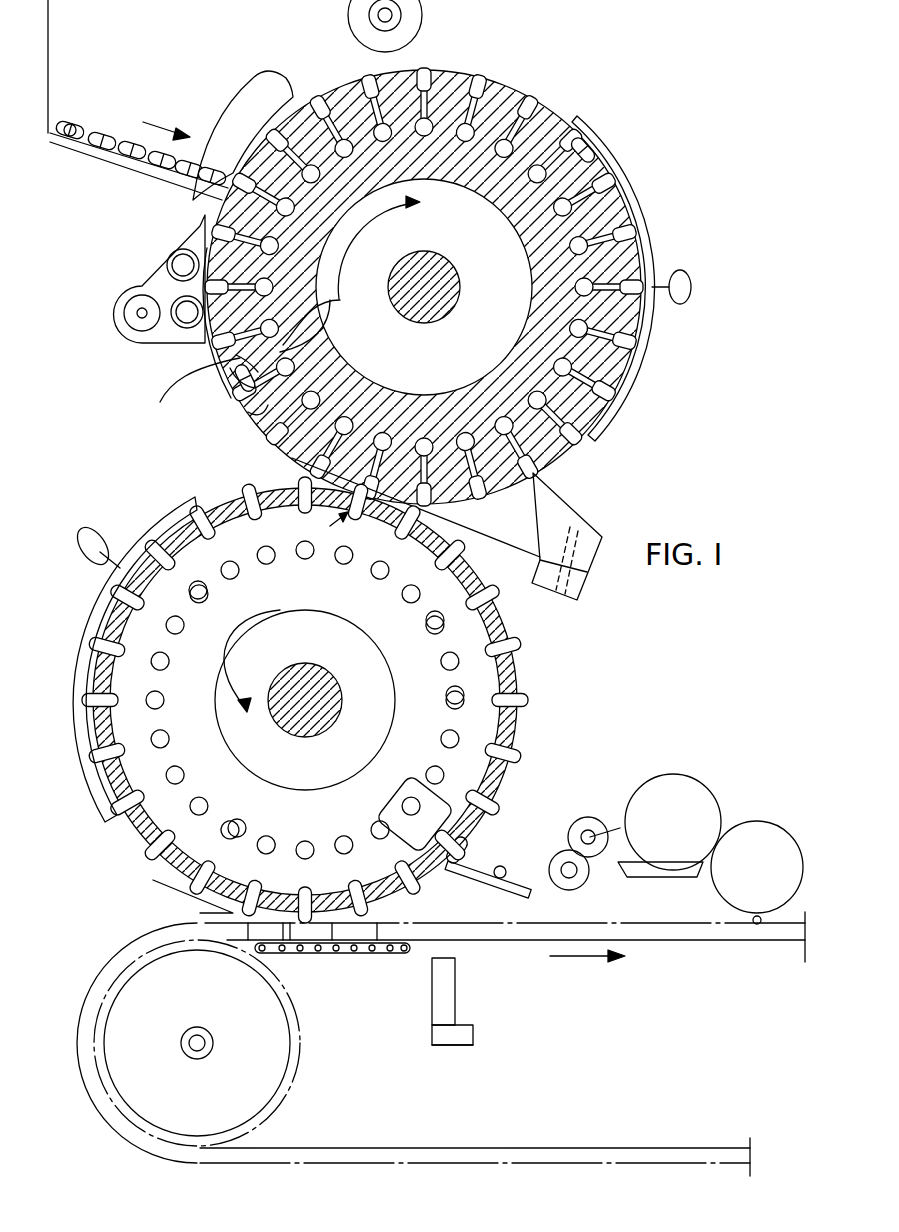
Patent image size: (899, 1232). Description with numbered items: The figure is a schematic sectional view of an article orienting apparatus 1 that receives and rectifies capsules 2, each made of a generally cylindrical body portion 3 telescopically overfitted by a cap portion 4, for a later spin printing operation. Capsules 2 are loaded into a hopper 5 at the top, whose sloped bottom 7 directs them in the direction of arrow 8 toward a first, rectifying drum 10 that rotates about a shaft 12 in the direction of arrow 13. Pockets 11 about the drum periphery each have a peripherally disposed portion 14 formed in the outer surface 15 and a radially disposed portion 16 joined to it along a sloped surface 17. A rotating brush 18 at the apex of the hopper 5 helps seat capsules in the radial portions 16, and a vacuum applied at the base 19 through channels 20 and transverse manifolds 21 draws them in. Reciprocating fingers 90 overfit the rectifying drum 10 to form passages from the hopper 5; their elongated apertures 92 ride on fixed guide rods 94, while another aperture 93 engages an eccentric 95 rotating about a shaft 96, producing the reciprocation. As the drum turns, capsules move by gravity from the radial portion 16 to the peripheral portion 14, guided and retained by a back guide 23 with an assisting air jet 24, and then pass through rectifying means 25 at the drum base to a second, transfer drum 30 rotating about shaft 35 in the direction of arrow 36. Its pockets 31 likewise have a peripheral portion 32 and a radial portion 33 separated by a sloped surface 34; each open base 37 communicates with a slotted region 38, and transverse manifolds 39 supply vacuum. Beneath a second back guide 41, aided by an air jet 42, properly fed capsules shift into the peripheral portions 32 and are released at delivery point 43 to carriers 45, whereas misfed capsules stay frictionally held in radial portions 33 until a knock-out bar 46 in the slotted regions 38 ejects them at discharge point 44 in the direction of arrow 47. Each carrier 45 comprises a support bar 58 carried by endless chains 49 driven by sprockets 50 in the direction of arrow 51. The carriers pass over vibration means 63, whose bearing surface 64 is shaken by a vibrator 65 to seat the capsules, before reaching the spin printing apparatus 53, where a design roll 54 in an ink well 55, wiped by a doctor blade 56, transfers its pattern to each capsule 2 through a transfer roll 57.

The article orienting apparatus 1 is at (638, 663).
The capsules 2 is at (150, 178).
The body portion 3 is at (92, 136).
The cap portion 4 is at (72, 125).
The hopper 5 is at (161, 62).
The sloped bottom 7 is at (70, 150).
The arrow 8 is at (172, 126).
The rectifying drum 10 is at (410, 361).
The pockets 11 is at (225, 386).
The shaft 12 is at (462, 280).
The arrow 13 is at (358, 290).
The peripherally disposed portion 14 is at (258, 420).
The outer surface 15 is at (236, 358).
The radially disposed portion 16 is at (268, 410).
The sloped surface 17 is at (252, 372).
The rotating brush 18 is at (423, 13).
The base 19 is at (186, 387).
The channels 20 is at (332, 298).
The manifolds 21 is at (336, 345).
The back guide 23 is at (642, 228).
The air jet 24 is at (690, 295).
The rectifying means 25 is at (545, 518).
The transfer drum 30 is at (320, 648).
The pockets 31 is at (528, 677).
The peripherally disposed portion 32 is at (243, 498).
The radially disposed portion 33 is at (262, 508).
The sloped surface 34 is at (255, 520).
The shaft 35 is at (330, 718).
The arrow 36 is at (245, 660).
The base 37 is at (190, 555).
The slotted region 38 is at (324, 591).
The manifolds 39 is at (447, 702).
The back guide 41 is at (164, 522).
The air jet 42 is at (85, 540).
The delivery point 43 is at (328, 525).
The discharge point 44 is at (272, 886).
The carriers 45 is at (315, 938).
The knock-out bar 46 is at (404, 826).
The arrow 47 is at (462, 872).
The endless chains 49 is at (470, 942).
The sprockets 50 is at (290, 1052).
The arrow 51 is at (575, 958).
The spin printing apparatus 53 is at (707, 753).
The design roll 54 is at (665, 775).
The ink well 55 is at (645, 880).
The doctor blade 56 is at (625, 822).
The transfer roll 57 is at (762, 830).
The support bar 58 is at (360, 950).
The vibration means 63 is at (440, 1048).
The bearing surface 64 is at (428, 1000).
The vibrator 65 is at (476, 1040).
The reciprocating fingers 90 is at (245, 105).
The elongated apertures 92 is at (172, 252).
The aperture 93 is at (120, 325).
The guide rods 94 is at (190, 266).
The eccentric 95 is at (138, 330).
The shaft 96 is at (136, 313).